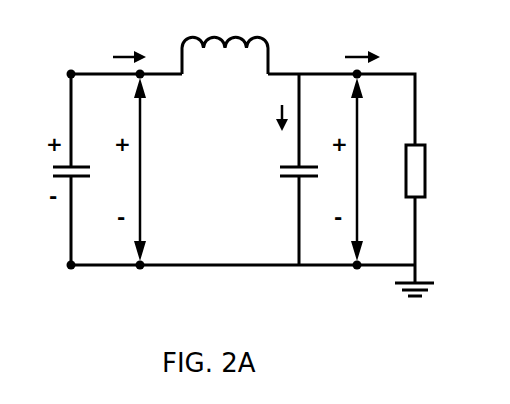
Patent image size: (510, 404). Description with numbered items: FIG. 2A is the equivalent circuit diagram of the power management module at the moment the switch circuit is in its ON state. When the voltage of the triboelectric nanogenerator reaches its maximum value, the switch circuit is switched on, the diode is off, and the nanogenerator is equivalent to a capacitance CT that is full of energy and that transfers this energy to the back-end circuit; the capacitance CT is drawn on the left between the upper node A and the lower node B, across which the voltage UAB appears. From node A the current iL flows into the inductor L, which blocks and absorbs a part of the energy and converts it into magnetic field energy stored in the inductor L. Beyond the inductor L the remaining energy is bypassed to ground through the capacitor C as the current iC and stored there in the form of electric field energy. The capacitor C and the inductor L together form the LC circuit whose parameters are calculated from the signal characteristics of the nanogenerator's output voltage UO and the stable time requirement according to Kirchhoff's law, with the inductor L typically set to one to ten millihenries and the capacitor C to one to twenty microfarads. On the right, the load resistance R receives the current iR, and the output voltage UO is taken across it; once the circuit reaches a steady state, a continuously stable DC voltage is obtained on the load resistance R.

The node A is at (69, 59).
The node B is at (68, 289).
The inductor L is at (225, 61).
The equivalent capacitance CT is at (56, 171).
The capacitor C is at (288, 170).
The load resistance R is at (427, 171).
The voltage between A and B UAB is at (174, 169).
The voltage output UO is at (358, 169).
The inductor current iL is at (134, 44).
The load current iR is at (367, 44).
The capacitor current iC is at (256, 120).